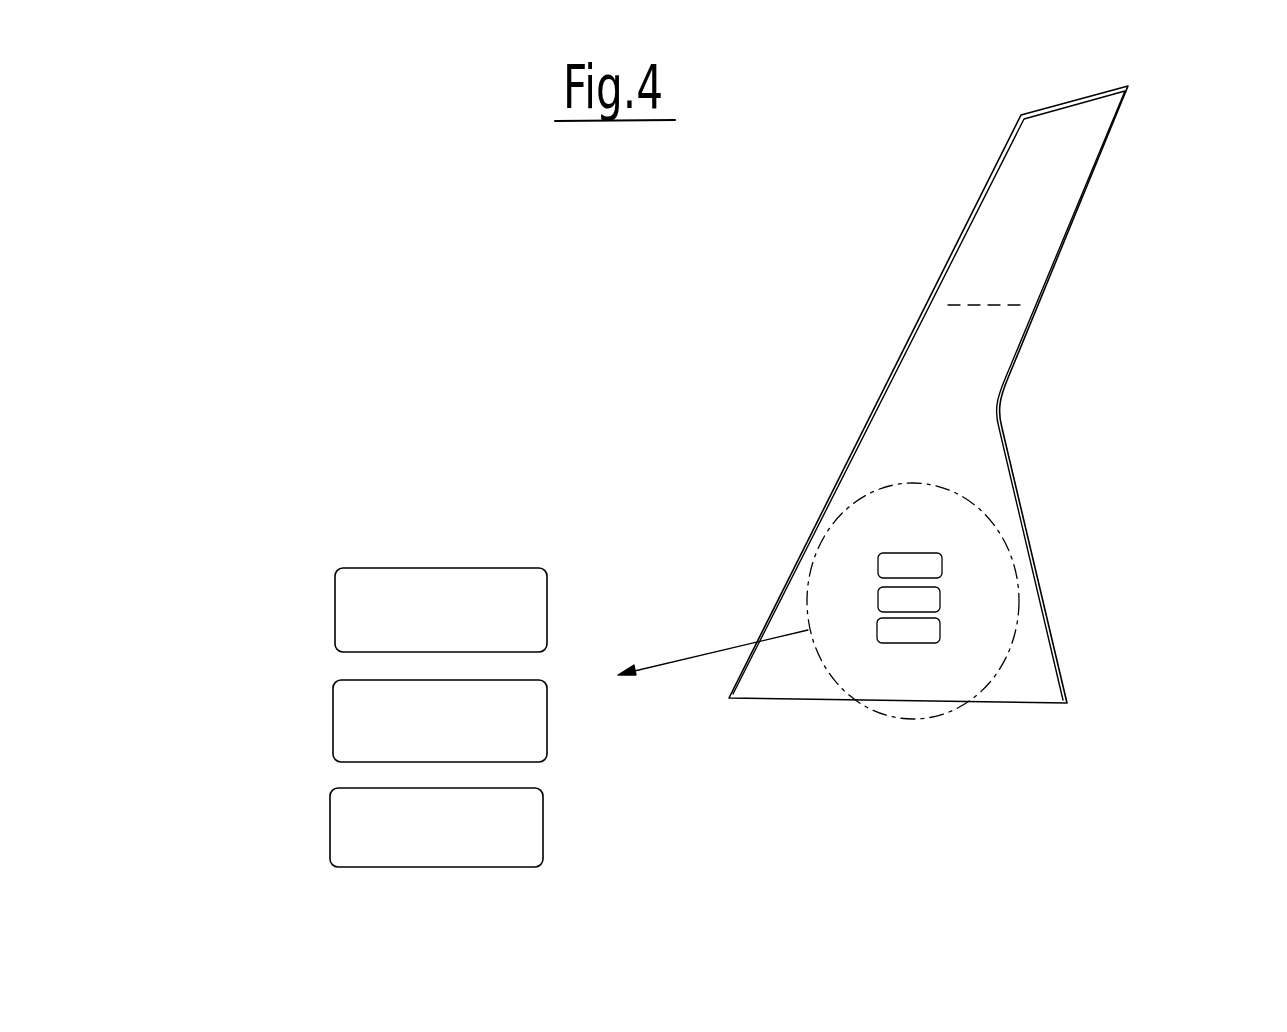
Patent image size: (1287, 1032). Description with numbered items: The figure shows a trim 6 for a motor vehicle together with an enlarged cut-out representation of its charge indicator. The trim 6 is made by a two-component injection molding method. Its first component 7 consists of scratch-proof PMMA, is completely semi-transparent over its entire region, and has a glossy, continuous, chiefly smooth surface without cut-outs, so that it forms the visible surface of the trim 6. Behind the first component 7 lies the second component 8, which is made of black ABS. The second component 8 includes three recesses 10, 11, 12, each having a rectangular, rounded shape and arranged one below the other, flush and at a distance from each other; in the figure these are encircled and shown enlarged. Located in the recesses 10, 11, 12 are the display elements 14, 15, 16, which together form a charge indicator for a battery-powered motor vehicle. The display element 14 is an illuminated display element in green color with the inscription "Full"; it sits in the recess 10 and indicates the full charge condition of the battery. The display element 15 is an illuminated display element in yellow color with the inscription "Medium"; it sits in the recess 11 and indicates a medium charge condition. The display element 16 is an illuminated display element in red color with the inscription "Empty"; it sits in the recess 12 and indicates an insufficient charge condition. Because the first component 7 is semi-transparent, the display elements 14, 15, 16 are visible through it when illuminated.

The trim 6 is at (878, 256).
The first component 7 is at (1007, 263).
The second component 8 is at (1027, 305).
The recess 10 is at (912, 565).
The recess 11 is at (922, 600).
The recess 12 is at (925, 630).
The display element 14 is at (358, 603).
The display element 15 is at (343, 718).
The display element 16 is at (348, 822).